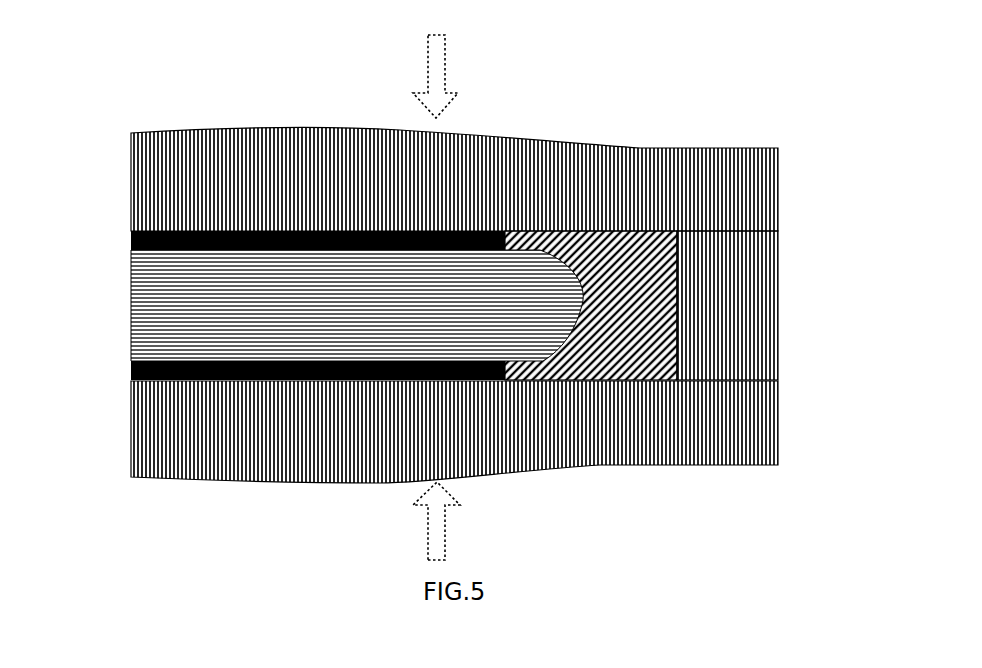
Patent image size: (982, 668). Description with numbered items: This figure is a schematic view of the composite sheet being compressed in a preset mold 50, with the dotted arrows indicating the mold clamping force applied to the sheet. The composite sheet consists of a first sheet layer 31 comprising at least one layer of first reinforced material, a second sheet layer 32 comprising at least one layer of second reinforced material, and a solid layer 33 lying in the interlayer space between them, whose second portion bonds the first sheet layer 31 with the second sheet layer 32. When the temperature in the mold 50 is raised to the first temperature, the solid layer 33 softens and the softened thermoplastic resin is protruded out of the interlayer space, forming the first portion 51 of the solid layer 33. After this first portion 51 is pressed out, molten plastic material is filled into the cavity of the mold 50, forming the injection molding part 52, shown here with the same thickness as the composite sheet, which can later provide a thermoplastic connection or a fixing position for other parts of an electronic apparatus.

The first sheet layer 31 is at (138, 242).
The second sheet layer 32 is at (137, 367).
The solid layer 33 is at (250, 338).
The mold 50 is at (580, 428).
The first portion of the solid layer 51 is at (535, 290).
The injection molding part 52 is at (665, 353).